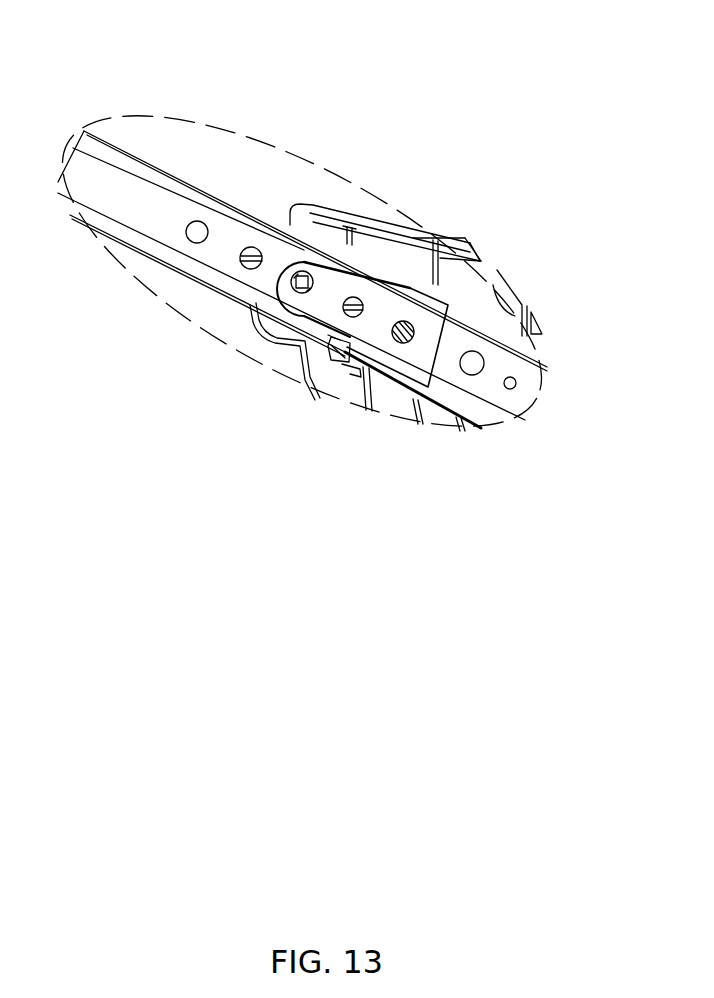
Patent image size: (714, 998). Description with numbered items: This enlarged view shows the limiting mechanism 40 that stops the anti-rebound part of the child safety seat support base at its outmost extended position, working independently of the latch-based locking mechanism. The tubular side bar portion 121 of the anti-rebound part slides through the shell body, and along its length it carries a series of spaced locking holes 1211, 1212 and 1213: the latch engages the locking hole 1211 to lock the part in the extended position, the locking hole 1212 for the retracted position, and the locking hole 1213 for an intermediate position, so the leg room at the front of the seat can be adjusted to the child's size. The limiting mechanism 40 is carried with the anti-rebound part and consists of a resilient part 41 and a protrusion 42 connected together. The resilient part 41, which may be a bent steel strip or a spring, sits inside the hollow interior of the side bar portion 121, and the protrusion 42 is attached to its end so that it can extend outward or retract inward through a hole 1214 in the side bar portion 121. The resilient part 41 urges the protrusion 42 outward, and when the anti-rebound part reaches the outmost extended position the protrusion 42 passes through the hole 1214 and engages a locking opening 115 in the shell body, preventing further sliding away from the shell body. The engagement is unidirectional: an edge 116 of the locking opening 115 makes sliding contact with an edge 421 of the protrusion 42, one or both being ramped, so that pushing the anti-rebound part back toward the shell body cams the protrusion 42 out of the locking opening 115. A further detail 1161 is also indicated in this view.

The side bar portion 121 is at (145, 207).
The locking hole 1212 is at (197, 209).
The locking hole 1213 is at (253, 235).
The hole 1214 is at (338, 321).
The locking opening 115 is at (366, 340).
The locking hole 1211 is at (411, 356).
The limiting mechanism 40 is at (233, 448).
The resilient part 41 is at (280, 310).
The protrusion 42 is at (333, 338).
The edge 421 is at (324, 381).
The edge 116 is at (347, 383).
The tab 1161 is at (342, 383).